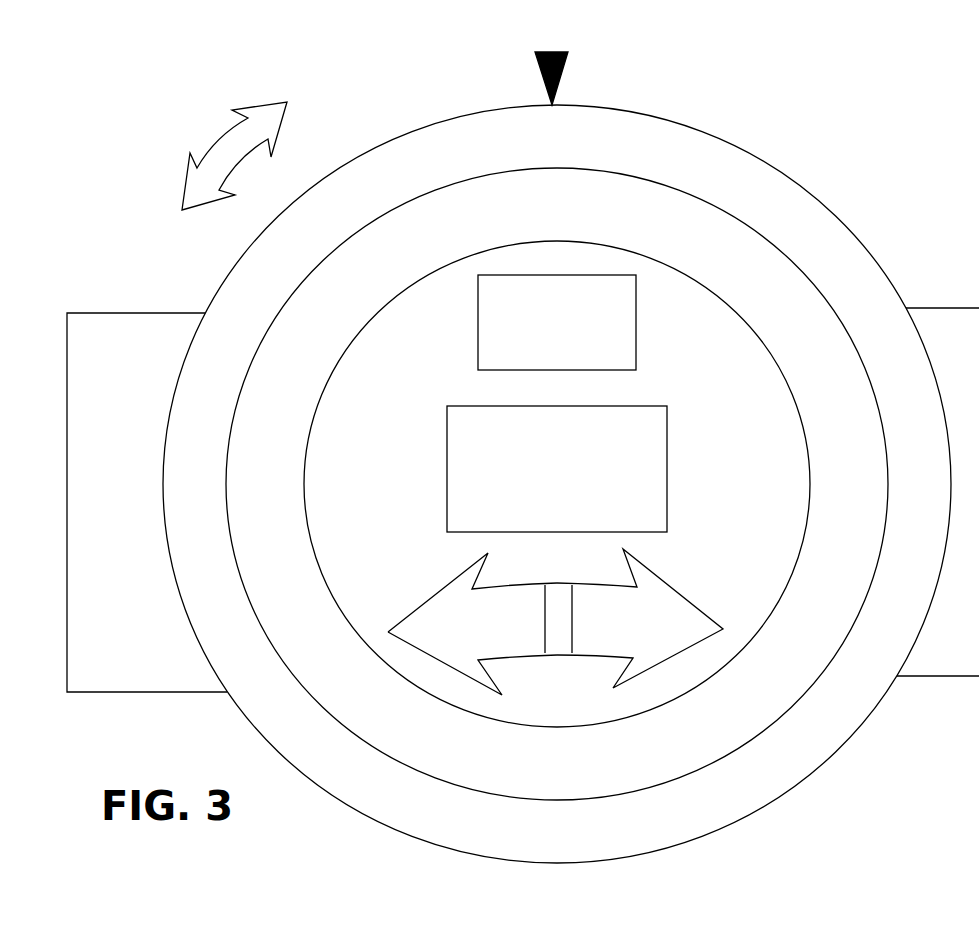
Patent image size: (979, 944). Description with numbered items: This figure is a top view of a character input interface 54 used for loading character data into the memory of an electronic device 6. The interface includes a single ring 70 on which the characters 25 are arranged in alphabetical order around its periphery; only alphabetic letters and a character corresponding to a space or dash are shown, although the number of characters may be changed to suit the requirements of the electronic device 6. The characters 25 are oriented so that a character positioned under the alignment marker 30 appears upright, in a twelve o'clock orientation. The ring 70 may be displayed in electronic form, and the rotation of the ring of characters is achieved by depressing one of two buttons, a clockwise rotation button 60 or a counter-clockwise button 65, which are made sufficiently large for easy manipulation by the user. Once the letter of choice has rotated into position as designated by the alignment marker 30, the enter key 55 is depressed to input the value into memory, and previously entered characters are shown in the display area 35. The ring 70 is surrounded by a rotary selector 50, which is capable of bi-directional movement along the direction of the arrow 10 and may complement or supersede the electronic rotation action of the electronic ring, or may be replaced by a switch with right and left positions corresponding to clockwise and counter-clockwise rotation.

The electronic device 6 is at (126, 680).
The arrow 10 is at (213, 139).
The characters 25 is at (884, 262).
The alignment marker 30 is at (567, 76).
The display area 35 is at (617, 478).
The rotary selector 50 is at (682, 135).
The character input interface 54 is at (905, 54).
The enter key 55 is at (487, 353).
The clockwise rotation button 60 is at (692, 620).
The counter-clockwise button 65 is at (427, 623).
The ring 70 is at (757, 260).